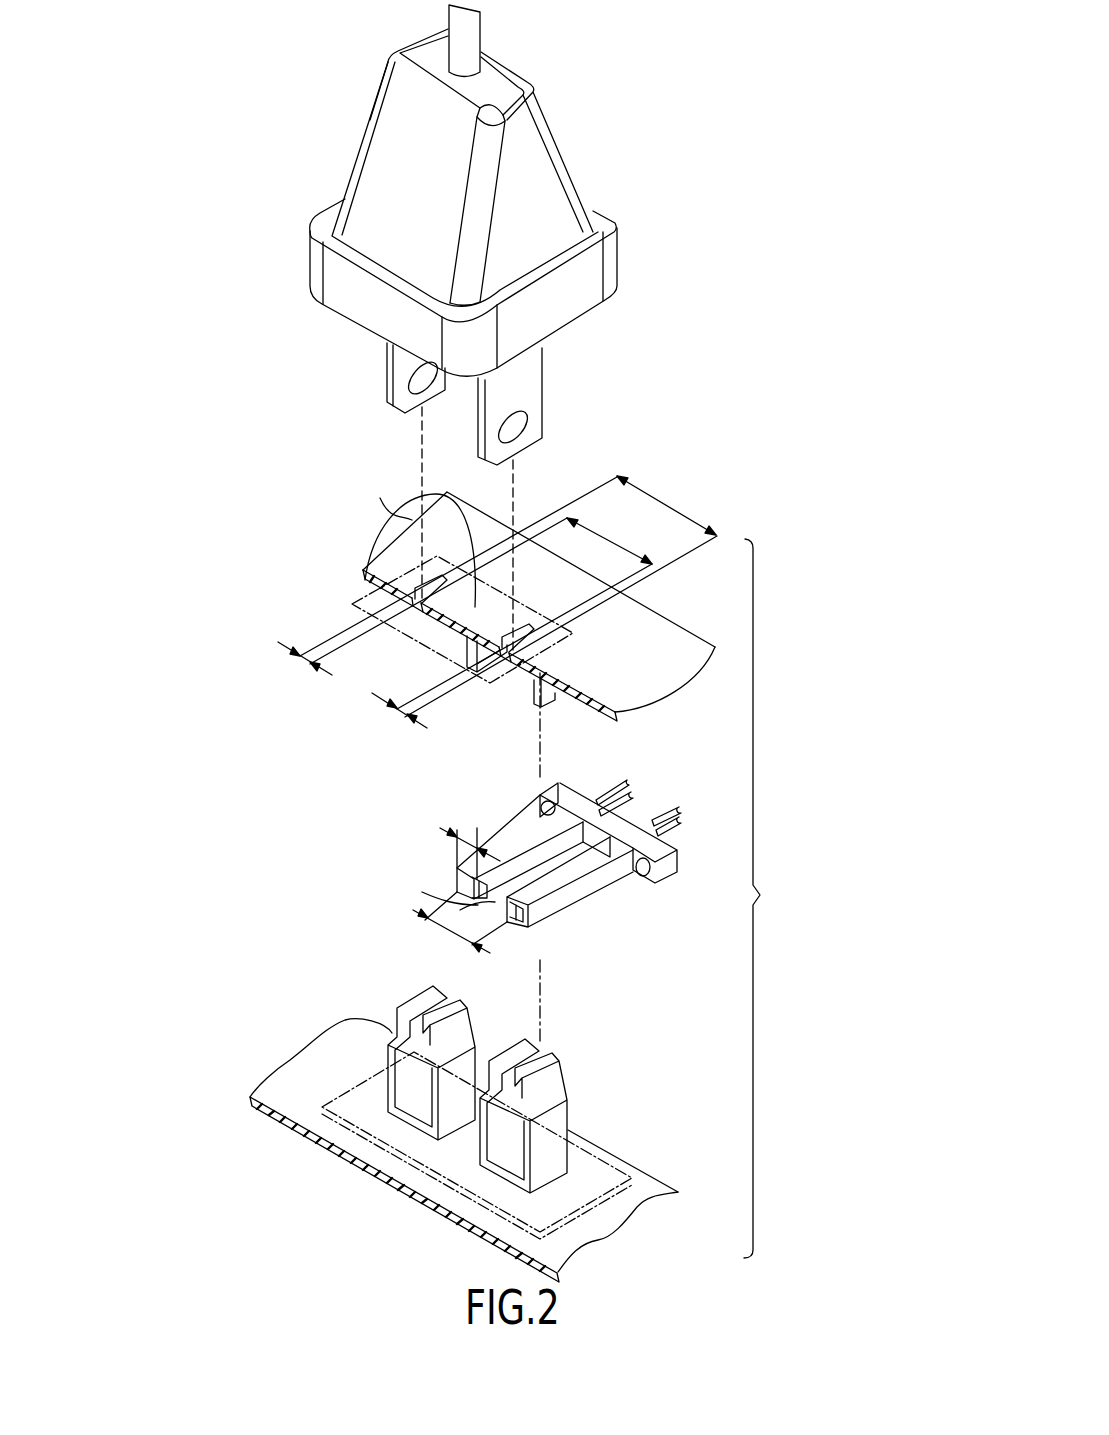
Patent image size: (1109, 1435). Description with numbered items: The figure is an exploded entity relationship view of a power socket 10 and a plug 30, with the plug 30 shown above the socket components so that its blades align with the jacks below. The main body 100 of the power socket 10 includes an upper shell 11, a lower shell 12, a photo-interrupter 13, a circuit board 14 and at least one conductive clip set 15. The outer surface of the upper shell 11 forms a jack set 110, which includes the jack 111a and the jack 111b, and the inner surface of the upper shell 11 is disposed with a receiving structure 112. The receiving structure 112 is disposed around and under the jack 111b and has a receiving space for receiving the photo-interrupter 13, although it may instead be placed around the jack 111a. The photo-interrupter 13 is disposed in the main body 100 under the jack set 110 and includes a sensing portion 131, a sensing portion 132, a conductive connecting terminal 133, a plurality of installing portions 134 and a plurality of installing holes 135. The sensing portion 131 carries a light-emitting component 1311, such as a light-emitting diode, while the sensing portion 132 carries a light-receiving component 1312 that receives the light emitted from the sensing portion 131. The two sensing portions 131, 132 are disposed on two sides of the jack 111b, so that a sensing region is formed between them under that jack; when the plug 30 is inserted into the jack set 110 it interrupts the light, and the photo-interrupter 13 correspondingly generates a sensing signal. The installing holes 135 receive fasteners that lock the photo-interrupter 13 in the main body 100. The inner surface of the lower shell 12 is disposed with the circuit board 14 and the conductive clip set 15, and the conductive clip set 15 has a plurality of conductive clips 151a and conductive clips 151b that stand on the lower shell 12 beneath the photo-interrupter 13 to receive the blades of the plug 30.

The plug 30 is at (555, 310).
The power socket 10 is at (745, 508).
The main body 100 is at (780, 898).
The upper shell 11 is at (680, 642).
The jack set 110 is at (355, 603).
The jack 111a is at (437, 575).
The jack 111b is at (555, 642).
The receiving structure 112 is at (462, 640).
The photo-interrupter 13 is at (562, 859).
The sensing portion 131 is at (520, 842).
The sensing portion 132 is at (575, 870).
The conductive connecting terminal 133 is at (618, 782).
The installing portion 134 is at (663, 870).
The installing hole 135 is at (538, 807).
The light-emitting component 1311 is at (457, 873).
The light-receiving component 1312 is at (520, 927).
The lower shell 12 is at (627, 1207).
The circuit board 14 is at (617, 1145).
The conductive clip set 15 is at (439, 1140).
The conductive clip 151a is at (425, 1137).
The conductive clip 151b is at (520, 1193).